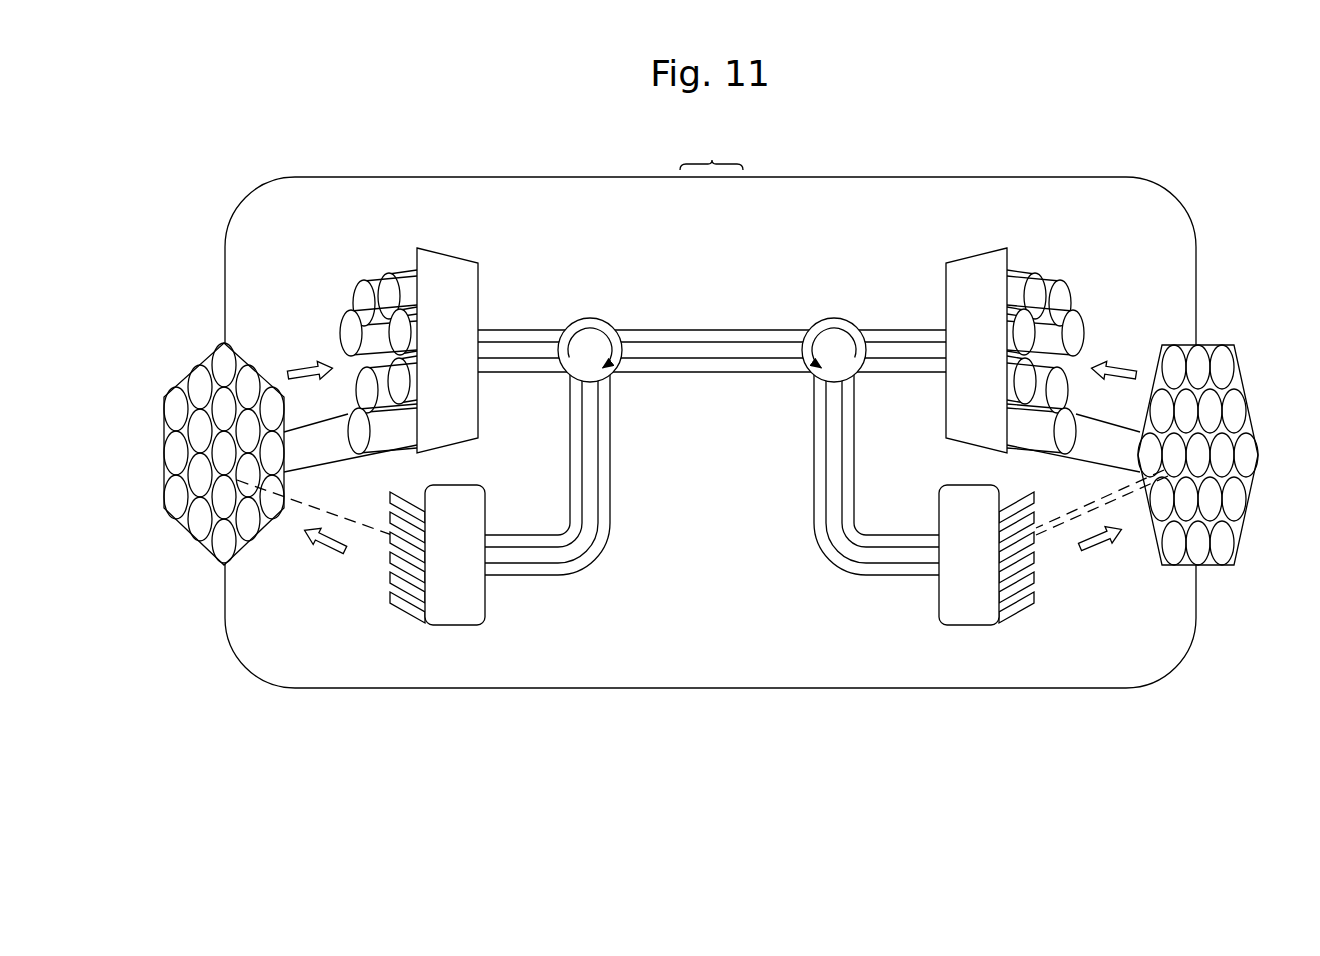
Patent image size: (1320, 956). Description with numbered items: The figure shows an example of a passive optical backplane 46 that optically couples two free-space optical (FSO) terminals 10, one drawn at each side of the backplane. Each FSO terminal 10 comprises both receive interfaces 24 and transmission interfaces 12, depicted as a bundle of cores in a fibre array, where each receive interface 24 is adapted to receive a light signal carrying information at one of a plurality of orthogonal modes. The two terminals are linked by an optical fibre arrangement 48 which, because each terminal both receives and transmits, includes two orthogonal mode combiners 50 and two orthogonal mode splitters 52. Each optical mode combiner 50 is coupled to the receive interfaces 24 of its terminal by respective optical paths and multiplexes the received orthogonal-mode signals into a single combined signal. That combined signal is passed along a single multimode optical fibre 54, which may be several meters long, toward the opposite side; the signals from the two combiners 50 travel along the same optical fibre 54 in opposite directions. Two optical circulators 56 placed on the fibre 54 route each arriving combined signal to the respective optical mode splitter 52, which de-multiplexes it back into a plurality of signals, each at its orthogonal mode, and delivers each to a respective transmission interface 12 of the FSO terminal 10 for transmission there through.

The FSO terminal 10 is at (160, 387).
The transmission interface 12 is at (240, 480).
The receive interface 24 is at (202, 376).
The optical backplane 46 is at (1168, 180).
The optical fibre arrangement 48 is at (711, 154).
The optical mode combiner 50 is at (450, 251).
The optical mode splitter 52 is at (484, 505).
The optical fibre 54 is at (715, 326).
The optical circulator 56 is at (589, 318).